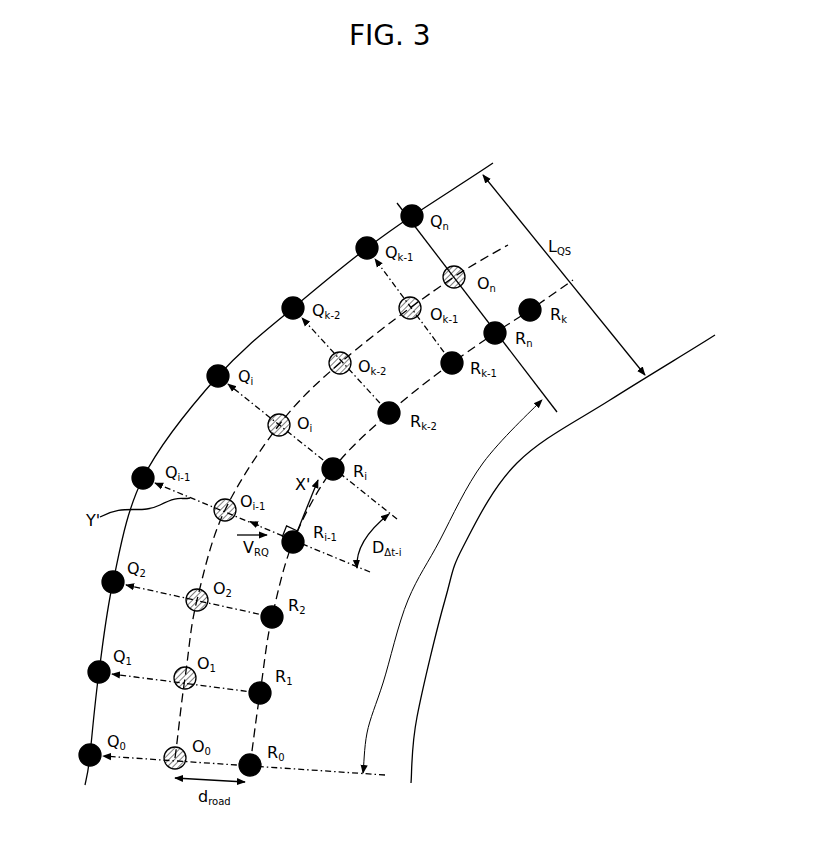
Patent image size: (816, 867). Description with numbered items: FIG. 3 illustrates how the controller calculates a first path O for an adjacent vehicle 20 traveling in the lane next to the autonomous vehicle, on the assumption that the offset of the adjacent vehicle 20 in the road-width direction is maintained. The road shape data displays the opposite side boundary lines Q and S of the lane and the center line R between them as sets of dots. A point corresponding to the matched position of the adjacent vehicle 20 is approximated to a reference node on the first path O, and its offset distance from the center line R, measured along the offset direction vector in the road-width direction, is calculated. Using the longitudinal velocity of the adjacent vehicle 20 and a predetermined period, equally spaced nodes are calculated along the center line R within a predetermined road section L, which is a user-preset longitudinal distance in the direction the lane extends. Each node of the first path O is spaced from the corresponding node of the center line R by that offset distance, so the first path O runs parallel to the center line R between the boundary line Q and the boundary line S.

The adjacent vehicle 20 is at (160, 763).
The boundary line Q is at (289, 474).
The first path O is at (349, 494).
The center line R is at (418, 518).
The road section L is at (452, 586).
The boundary line S is at (563, 554).